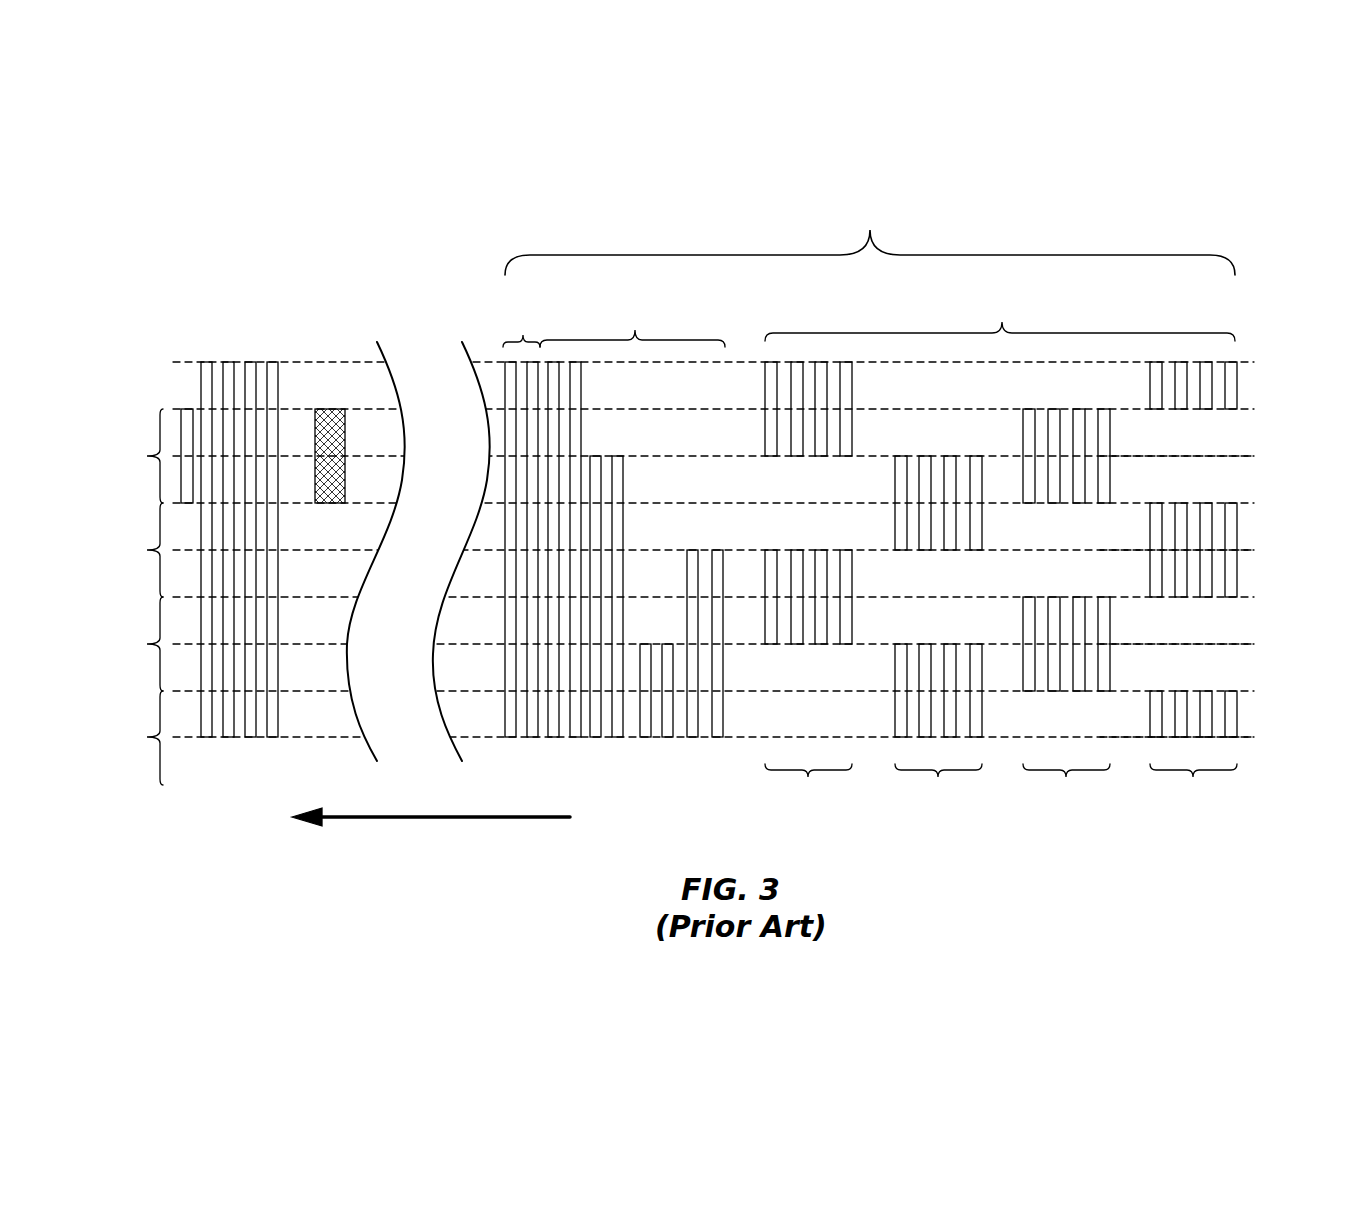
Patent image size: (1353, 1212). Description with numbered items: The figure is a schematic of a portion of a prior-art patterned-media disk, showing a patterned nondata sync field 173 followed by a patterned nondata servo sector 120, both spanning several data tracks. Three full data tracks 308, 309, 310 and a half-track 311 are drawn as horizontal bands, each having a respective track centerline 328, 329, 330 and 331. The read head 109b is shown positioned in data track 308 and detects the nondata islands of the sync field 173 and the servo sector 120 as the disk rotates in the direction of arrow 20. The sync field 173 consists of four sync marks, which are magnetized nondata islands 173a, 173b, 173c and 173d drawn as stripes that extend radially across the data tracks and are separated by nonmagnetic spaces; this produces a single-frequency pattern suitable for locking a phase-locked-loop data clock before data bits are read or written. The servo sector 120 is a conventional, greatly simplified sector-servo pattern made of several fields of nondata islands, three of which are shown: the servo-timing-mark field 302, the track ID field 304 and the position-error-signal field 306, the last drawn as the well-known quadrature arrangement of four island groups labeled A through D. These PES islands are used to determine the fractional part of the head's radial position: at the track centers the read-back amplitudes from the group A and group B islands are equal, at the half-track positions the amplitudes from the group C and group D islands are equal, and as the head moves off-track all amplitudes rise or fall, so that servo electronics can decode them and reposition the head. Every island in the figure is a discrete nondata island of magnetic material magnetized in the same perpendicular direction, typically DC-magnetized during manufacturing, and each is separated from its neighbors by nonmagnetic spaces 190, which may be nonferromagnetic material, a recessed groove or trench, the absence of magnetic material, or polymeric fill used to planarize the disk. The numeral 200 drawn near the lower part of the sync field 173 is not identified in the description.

The arrow 20 is at (388, 819).
The read head 109b is at (190, 413).
The patterned nondata servo sector 120 is at (870, 236).
The patterned nondata sync field 173 is at (222, 575).
The sync mark 173a is at (207, 737).
The sync mark 173b is at (228, 737).
The sync mark 173c is at (250, 737).
The sync mark 173d is at (272, 737).
The nonmagnetic spaces 190 is at (240, 678).
The track centerline 200 is at (218, 714).
The servo-timing-mark (STM) field 302 is at (503, 338).
The track ID (TID) field 304 is at (703, 336).
The position-error-signal (PES) field 306 is at (846, 334).
The data track 308 is at (677, 456).
The data track 309 is at (677, 550).
The data track 310 is at (677, 644).
The half-track 311 is at (677, 738).
The track centerline 328 is at (1247, 455).
The track centerline 329 is at (1247, 549).
The track centerline 330 is at (1247, 643).
The track centerline 331 is at (1247, 736).